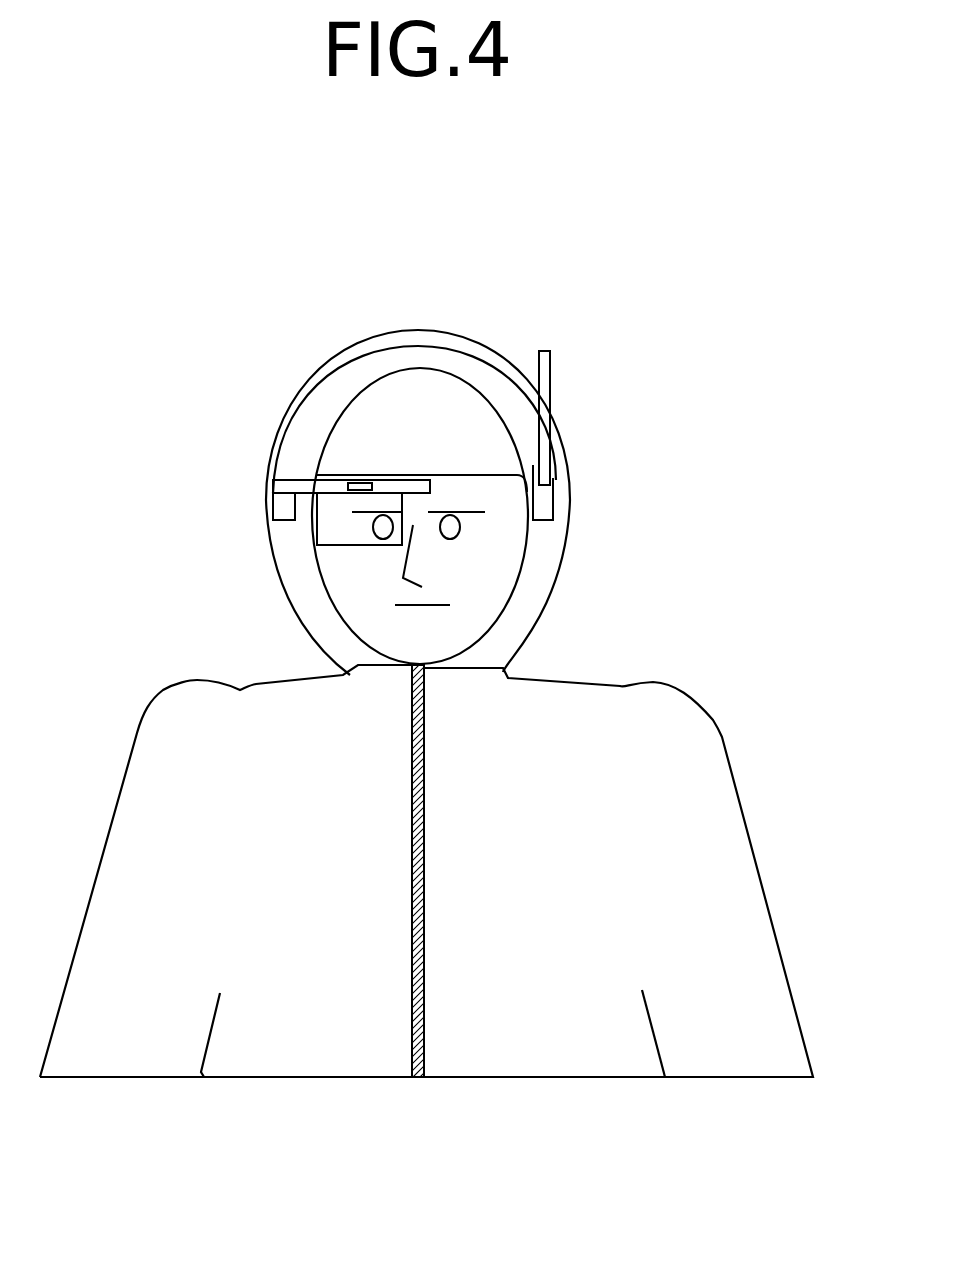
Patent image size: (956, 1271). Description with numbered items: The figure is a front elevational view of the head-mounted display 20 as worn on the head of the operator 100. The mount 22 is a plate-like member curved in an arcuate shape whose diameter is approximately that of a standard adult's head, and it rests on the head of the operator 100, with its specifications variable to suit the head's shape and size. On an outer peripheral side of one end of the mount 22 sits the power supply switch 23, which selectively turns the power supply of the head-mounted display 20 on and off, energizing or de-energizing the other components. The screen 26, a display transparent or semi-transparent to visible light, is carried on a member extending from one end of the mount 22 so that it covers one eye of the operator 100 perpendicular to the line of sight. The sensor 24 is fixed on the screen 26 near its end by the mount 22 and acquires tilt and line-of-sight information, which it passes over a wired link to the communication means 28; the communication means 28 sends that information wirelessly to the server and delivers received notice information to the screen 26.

The head-mounted display 20 is at (385, 468).
The mount 22 is at (370, 363).
The power supply switch 23 is at (545, 503).
The sensor 24 is at (359, 481).
The screen 26 is at (316, 531).
The communication means 28 is at (545, 373).
The operator 100 is at (727, 802).